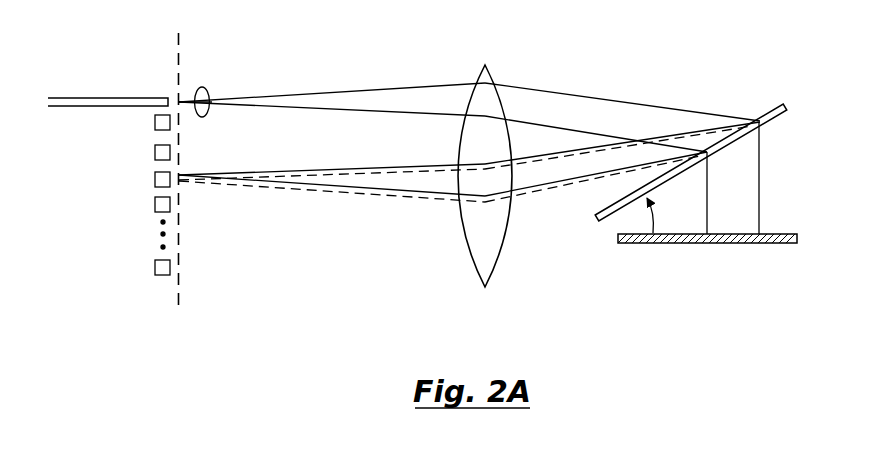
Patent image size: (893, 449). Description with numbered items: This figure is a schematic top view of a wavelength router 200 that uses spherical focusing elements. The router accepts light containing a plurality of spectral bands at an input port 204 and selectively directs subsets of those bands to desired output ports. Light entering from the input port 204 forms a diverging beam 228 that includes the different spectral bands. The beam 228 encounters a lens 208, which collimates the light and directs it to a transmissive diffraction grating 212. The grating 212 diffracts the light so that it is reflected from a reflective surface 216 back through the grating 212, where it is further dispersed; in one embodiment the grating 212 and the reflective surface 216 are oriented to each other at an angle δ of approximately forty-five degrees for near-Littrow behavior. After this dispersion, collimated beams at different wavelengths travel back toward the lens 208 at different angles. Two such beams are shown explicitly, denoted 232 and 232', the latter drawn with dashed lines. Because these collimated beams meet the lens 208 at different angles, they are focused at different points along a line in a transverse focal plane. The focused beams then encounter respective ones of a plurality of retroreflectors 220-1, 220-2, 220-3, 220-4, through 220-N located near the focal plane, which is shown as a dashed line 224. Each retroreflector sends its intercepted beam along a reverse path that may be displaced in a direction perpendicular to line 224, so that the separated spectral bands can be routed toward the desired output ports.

The wavelength router 200 is at (598, 72).
The input port 204 is at (105, 98).
The lens 208 is at (476, 278).
The transmissive diffraction grating 212 is at (788, 106).
The reflective surface 216 is at (797, 235).
The retroreflector 220-1 is at (154, 123).
The retroreflector 220-2 is at (154, 152).
The retroreflector 220-3 is at (154, 179).
The retroreflector 220-4 is at (154, 205).
The retroreflector 220-N is at (154, 267).
The line 224 is at (178, 307).
The diverging beam 228 is at (210, 97).
The collimated beam 232 is at (469, 159).
The collimated beam 232' is at (465, 162).